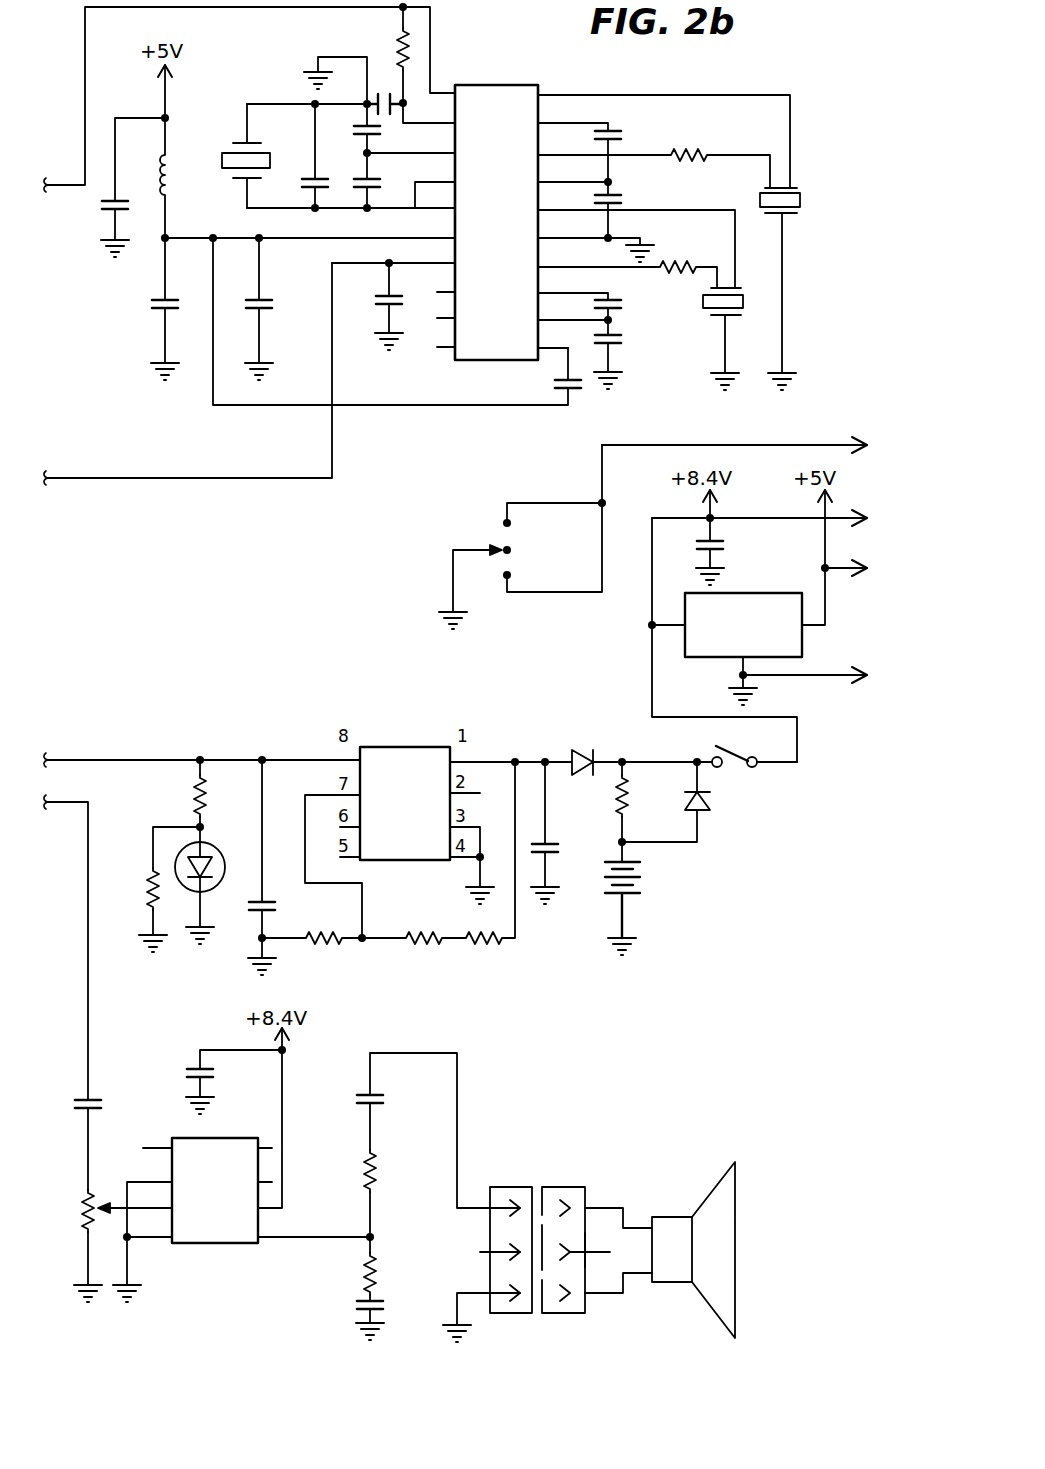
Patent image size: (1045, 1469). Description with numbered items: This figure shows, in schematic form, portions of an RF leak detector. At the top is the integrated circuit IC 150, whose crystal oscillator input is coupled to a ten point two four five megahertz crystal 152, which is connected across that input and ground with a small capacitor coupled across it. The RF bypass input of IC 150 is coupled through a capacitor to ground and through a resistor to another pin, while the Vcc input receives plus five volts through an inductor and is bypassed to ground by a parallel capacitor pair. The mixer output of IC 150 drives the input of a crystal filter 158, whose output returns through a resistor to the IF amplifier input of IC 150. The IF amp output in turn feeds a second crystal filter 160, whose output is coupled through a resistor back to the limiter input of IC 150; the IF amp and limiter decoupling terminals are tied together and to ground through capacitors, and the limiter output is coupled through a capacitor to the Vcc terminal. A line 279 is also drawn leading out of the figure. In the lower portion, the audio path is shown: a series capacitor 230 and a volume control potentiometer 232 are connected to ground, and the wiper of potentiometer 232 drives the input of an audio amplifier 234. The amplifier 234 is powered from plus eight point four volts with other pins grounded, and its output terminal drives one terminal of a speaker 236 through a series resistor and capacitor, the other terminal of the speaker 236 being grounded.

The IC 150 is at (502, 78).
The crystal 152 is at (226, 124).
The crystal filter 158 is at (808, 188).
The crystal filter 160 is at (702, 300).
The output signal line 279 is at (801, 445).
The capacitor 230 is at (95, 1097).
The volume control potentiometer 232 is at (90, 1187).
The audio amplifier 234 is at (223, 1235).
The speaker 236 is at (675, 1187).